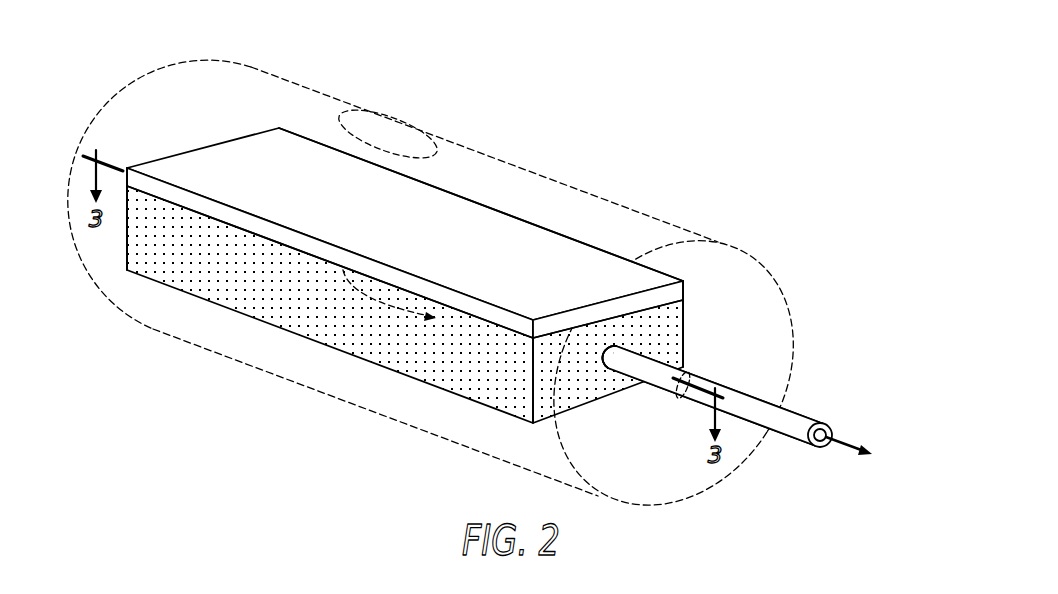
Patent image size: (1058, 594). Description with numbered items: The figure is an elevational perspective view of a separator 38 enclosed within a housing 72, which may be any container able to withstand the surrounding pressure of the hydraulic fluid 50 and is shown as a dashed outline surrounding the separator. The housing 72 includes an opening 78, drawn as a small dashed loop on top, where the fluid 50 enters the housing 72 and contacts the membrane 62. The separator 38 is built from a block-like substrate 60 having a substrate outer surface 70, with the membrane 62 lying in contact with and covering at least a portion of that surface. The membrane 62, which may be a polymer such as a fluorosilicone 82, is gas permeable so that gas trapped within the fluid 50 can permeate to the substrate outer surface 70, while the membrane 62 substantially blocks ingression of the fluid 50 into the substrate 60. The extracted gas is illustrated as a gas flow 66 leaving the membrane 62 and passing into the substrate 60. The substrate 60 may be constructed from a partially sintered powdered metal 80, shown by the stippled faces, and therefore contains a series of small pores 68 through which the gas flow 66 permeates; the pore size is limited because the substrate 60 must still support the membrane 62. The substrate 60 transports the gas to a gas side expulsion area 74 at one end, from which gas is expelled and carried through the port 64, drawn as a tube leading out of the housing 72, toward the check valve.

The separator 38 is at (452, 450).
The hydraulic fluid 50 is at (345, 170).
The substrate 60 is at (685, 320).
The membrane 62 is at (587, 240).
The port 64 is at (797, 407).
The gas flow 66 is at (378, 298).
The pores 68 is at (138, 242).
The substrate outer surface 70 is at (267, 292).
The housing 72 is at (548, 175).
The gas side expulsion area 74 is at (606, 356).
The opening 78 is at (343, 118).
The partially sintered powdered metal 80 is at (502, 388).
The fluorosilicone 82 is at (162, 168).